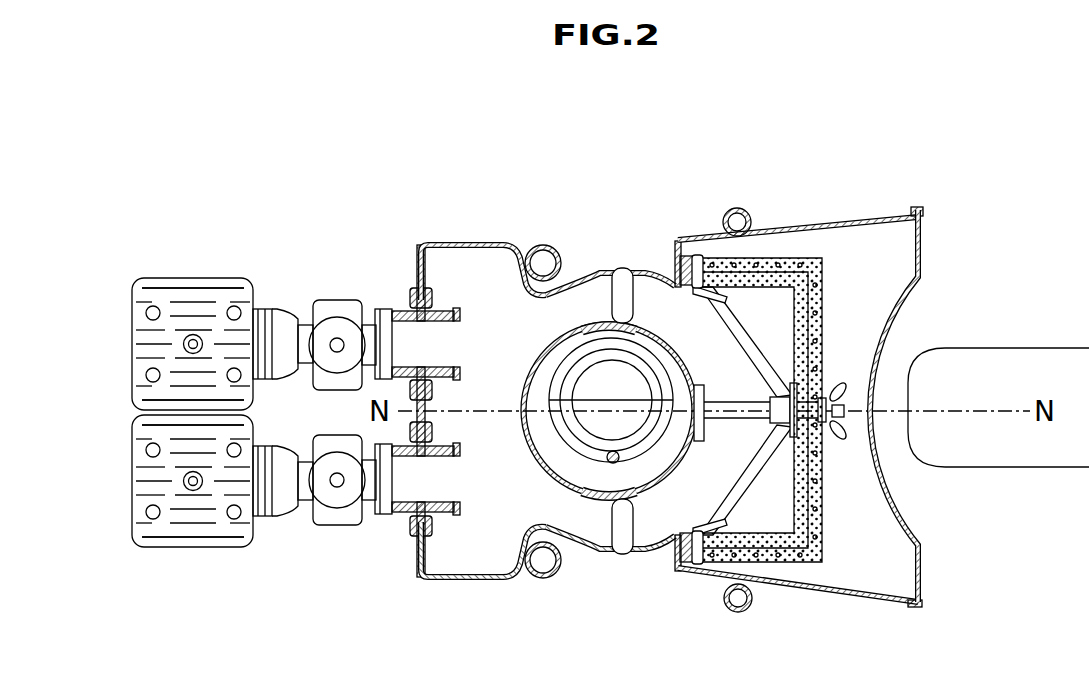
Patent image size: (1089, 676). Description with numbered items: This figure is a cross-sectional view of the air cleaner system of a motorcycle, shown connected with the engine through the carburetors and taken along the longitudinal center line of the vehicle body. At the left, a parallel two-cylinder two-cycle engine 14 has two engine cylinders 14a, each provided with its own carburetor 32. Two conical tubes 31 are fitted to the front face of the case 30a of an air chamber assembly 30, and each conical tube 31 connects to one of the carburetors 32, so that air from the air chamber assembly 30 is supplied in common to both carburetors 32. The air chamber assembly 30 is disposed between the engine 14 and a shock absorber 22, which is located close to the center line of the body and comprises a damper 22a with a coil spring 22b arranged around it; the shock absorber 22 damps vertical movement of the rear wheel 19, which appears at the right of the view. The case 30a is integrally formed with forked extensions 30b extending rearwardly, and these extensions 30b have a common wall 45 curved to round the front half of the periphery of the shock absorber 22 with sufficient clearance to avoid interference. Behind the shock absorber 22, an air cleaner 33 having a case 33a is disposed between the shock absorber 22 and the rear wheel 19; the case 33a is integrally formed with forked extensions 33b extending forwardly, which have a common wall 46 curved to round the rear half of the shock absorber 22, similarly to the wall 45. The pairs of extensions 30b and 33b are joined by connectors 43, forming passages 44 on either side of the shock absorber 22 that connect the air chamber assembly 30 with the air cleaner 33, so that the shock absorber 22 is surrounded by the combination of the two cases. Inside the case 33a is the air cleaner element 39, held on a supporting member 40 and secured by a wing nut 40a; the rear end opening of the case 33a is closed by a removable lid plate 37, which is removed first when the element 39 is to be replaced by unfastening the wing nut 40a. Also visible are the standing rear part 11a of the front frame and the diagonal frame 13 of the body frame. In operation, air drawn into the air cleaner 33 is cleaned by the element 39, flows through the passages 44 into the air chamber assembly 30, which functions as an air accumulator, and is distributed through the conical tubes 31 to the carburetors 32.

The engine 14 is at (133, 505).
The engine cylinders 14a is at (172, 282).
The carburetors 32 is at (332, 306).
The conical tubes 31 is at (402, 312).
The air chamber assembly 30 is at (443, 580).
The case 30a is at (432, 244).
The forked extensions 30b is at (597, 272).
The standing rear part 11a is at (538, 246).
The common wall 45 is at (524, 398).
The passages 44 is at (622, 411).
The connectors 43 is at (624, 268).
The shock absorber 22 is at (586, 452).
The damper 22a is at (633, 378).
The coil spring 22b is at (582, 352).
The common wall 46 is at (708, 374).
The supporting member 40 is at (744, 350).
The wing nut 40a is at (841, 441).
The air cleaner element 39 is at (808, 304).
The forked extensions 33b is at (677, 240).
The air cleaner 33 is at (848, 600).
The case 33a is at (888, 215).
The lid plate 37 is at (905, 521).
The diagonal frame 13 is at (745, 212).
The rear wheel 19 is at (1000, 470).